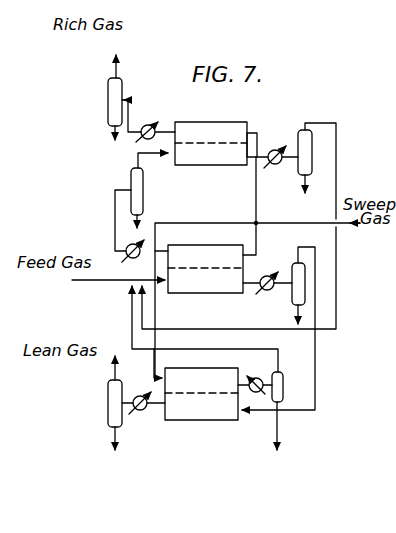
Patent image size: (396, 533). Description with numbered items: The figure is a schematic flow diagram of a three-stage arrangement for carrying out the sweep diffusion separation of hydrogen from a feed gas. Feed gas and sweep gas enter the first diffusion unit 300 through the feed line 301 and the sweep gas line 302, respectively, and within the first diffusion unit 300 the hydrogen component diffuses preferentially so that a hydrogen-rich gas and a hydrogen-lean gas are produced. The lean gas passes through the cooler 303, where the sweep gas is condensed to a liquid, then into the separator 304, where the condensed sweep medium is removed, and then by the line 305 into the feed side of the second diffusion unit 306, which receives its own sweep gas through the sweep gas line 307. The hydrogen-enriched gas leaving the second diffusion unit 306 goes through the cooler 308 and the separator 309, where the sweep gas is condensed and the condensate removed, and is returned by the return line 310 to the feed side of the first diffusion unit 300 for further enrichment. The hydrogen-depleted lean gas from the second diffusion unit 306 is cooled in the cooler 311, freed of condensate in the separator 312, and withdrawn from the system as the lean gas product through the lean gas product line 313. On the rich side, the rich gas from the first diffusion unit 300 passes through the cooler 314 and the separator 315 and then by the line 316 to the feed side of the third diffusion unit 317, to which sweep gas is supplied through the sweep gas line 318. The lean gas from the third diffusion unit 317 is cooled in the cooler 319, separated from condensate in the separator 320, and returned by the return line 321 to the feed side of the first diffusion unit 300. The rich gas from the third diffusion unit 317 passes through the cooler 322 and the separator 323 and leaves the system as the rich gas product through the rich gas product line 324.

The first diffusion unit 300 is at (212, 240).
The feed line 301 is at (150, 279).
The sweep gas line 302 is at (258, 238).
The cooler 303 is at (262, 275).
The separator 304 is at (295, 290).
The line 305 is at (316, 408).
The second diffusion unit 306 is at (200, 406).
The sweep gas line 307 is at (155, 348).
The cooler 308 is at (263, 374).
The separator 309 is at (283, 387).
The return line 310 is at (268, 355).
The cooler 311 is at (145, 412).
The separator 312 is at (108, 411).
The lean gas product line 313 is at (113, 366).
The cooler 314 is at (128, 244).
The separator 315 is at (138, 205).
The line 316 is at (163, 155).
The third diffusion unit 317 is at (228, 113).
The sweep gas line 318 is at (256, 186).
The cooler 319 is at (272, 150).
The separator 320 is at (307, 152).
The return line 321 is at (340, 177).
The cooler 322 is at (143, 126).
The separator 323 is at (108, 97).
The rich gas product line 324 is at (118, 64).